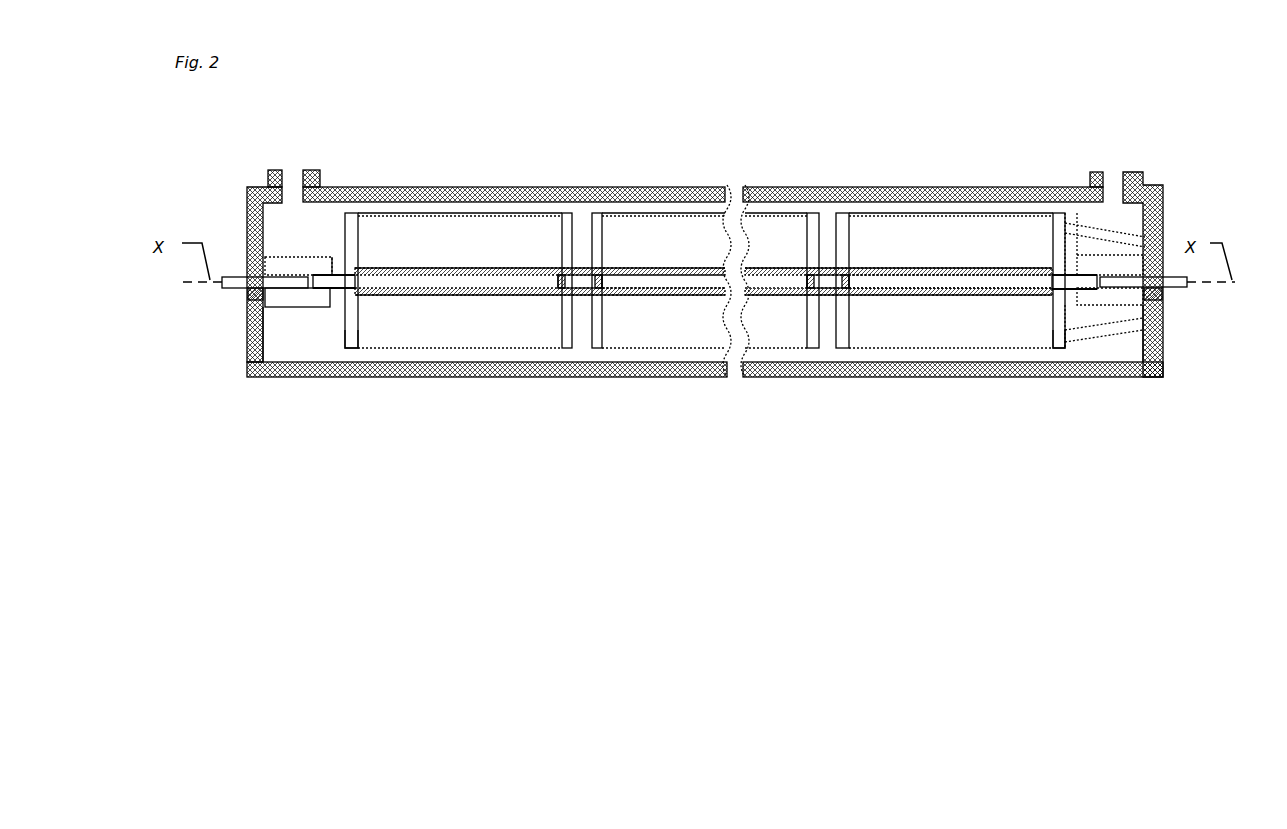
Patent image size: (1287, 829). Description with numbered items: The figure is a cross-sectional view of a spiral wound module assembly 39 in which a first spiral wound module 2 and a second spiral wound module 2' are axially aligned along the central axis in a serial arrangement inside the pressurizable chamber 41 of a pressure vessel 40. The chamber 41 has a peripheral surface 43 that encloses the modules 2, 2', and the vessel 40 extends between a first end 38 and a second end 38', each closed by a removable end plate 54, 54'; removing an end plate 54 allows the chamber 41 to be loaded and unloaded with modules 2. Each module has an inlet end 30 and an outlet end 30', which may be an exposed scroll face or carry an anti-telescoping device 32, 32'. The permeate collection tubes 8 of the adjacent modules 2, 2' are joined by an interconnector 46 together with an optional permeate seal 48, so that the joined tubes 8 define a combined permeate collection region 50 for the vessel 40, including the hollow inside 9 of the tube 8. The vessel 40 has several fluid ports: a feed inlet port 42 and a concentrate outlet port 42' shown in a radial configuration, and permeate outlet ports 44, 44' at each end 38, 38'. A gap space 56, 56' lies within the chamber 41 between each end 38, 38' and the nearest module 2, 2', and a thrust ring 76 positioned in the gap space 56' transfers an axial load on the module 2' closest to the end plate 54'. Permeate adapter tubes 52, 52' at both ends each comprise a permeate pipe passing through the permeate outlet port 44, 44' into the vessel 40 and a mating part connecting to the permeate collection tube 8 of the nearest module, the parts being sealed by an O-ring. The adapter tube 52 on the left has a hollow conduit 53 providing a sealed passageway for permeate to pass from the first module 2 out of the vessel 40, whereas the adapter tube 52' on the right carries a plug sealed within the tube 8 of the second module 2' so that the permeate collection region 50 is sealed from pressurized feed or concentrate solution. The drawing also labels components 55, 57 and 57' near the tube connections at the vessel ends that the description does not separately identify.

The first spiral wound module 2 is at (460, 242).
The second spiral wound module 2' is at (951, 242).
The permeate collection tube 8 is at (710, 295).
The inner periphery of permeate collection tube 9 is at (1003, 290).
The inlet end 30 is at (554, 219).
The outlet end 30' is at (1108, 220).
The anti-telescoping device 32 is at (322, 380).
The disc rim 32' is at (1025, 369).
The first end 38 is at (235, 243).
The second end 38' is at (1172, 244).
The spiral wound module assembly 39 is at (672, 150).
The pressure vessel 40 is at (638, 185).
The pressurizable chamber 41 is at (545, 207).
The feed inlet port 42 is at (276, 155).
The concentrate outlet port 42' is at (1137, 156).
The peripheral surface 43 is at (468, 377).
The permeate outlet port 44 is at (216, 313).
The permeate outlet port 44' is at (1185, 315).
The interconnector 46 is at (565, 292).
The permeate seal 48 is at (840, 297).
The permeate collection region 50 is at (653, 290).
The permeate adapter tube 52 is at (251, 338).
The permeate adapter tube 52' is at (1106, 349).
The hollow conduit 53 is at (298, 277).
The removable end plate 54 is at (231, 267).
The removable end plate 54' is at (1174, 274).
The bearing sleeve 55 is at (1058, 228).
The gap space 56 is at (234, 364).
The gap space 56' is at (1104, 374).
The shaft coupling 57 is at (314, 339).
The shaft coupling 57' is at (1022, 197).
The thrust ring 76 is at (1075, 340).